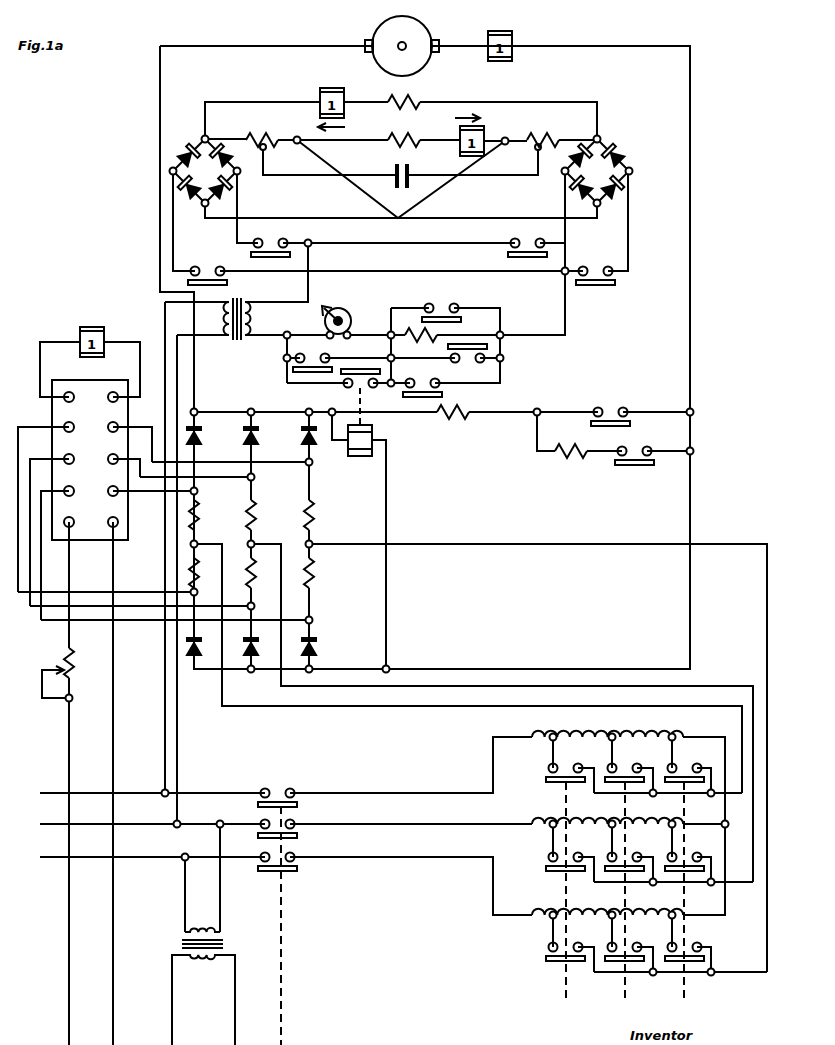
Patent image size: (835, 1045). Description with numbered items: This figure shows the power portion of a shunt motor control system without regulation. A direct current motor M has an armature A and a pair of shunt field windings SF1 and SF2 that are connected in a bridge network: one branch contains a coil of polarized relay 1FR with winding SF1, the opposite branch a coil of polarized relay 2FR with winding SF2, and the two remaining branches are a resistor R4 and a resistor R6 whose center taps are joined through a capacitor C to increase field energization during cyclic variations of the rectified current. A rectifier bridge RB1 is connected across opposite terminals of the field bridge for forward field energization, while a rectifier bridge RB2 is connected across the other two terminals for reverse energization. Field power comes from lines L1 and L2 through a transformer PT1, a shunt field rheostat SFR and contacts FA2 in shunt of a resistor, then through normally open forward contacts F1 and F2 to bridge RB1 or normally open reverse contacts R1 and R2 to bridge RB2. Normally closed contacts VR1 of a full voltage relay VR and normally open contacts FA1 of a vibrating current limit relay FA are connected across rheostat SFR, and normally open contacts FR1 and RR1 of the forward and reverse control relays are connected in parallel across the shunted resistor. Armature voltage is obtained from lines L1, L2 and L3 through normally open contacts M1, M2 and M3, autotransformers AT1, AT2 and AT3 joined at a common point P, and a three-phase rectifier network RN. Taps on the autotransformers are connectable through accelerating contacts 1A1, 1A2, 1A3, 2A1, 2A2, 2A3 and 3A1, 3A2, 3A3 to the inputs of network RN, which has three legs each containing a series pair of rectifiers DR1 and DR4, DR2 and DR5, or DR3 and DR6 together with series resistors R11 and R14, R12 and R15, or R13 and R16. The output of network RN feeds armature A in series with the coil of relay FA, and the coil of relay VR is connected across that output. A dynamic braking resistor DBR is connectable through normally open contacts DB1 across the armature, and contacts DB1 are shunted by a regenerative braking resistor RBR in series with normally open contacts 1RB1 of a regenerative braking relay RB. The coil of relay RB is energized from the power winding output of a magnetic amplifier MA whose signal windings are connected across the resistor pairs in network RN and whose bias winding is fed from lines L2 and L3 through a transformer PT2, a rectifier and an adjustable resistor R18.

The armature A is at (428, 22).
The direct current motor M is at (358, 83).
The vibrating current limit relay FA is at (514, 50).
The polarized relay 1FR is at (320, 98).
The polarized relay 2FR is at (483, 132).
The shunt field winding SF1 is at (422, 96).
The shunt field winding SF2 is at (412, 132).
The resistor R6 is at (542, 136).
The resistor R4 is at (268, 127).
The capacitor C is at (392, 168).
The rectifier bridge RB1 is at (608, 180).
The rectifier bridge RB2 is at (216, 180).
The reverse contact R1 is at (272, 238).
The reverse contact R2 is at (208, 268).
The forward contact F1 is at (524, 238).
The forward contact F2 is at (597, 268).
The transformer PT1 is at (240, 300).
The transformer PT2 is at (224, 946).
The shunt field rheostat SFR is at (346, 308).
The regenerative braking relay RB is at (419, 328).
The reverse control relay contacts RR1 is at (441, 304).
The current limit relay contacts FA1 is at (311, 358).
The current limit relay contacts FA2 is at (460, 364).
The full voltage relay contacts VR1 is at (354, 390).
The forward control relay contacts FR1 is at (422, 382).
The three-phase rectifier network RN is at (262, 405).
The dynamic braking resistor DBR is at (446, 406).
The dynamic braking contactor contacts DB1 is at (611, 408).
The regenerative braking resistor RBR is at (576, 446).
The regenerative braking relay contacts 1RB1 is at (631, 446).
The full voltage relay VR is at (367, 436).
The rectifier DR1 is at (200, 436).
The rectifier DR2 is at (259, 436).
The rectifier DR3 is at (302, 444).
The rectifier DR4 is at (212, 640).
The rectifier DR5 is at (270, 640).
The rectifier DR6 is at (318, 646).
The resistor R11 is at (202, 518).
The resistor R12 is at (259, 518).
The resistor R13 is at (319, 518).
The resistor R14 is at (202, 580).
The resistor R15 is at (259, 580).
The resistor R16 is at (318, 580).
The magnetic amplifier MA is at (80, 380).
The adjustable resistor R18 is at (75, 682).
The line L1 is at (92, 795).
The line L2 is at (120, 826).
The line L3 is at (102, 859).
The main contact M1 is at (286, 788).
The main contact M2 is at (292, 822).
The main contact M3 is at (294, 855).
The autotransformer AT1 is at (532, 724).
The autotransformer AT2 is at (536, 815).
The autotransformer AT3 is at (546, 905).
The common point P is at (728, 821).
The third accelerating relay contacts 3A1 is at (566, 768).
The second accelerating relay contacts 2A1 is at (627, 768).
The first accelerating relay contacts 1A1 is at (685, 768).
The third accelerating relay contacts 3A2 is at (567, 857).
The second accelerating relay contacts 2A2 is at (627, 857).
The first accelerating relay contacts 1A2 is at (685, 857).
The third accelerating relay contacts 3A3 is at (567, 947).
The second accelerating relay contacts 2A3 is at (627, 947).
The first accelerating relay contacts 1A3 is at (685, 947).